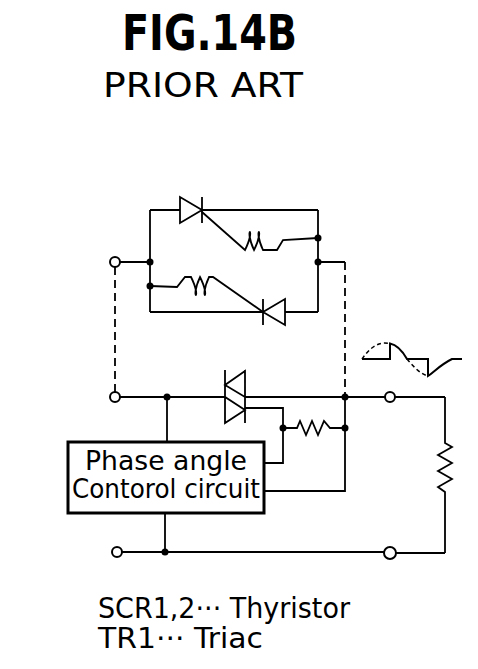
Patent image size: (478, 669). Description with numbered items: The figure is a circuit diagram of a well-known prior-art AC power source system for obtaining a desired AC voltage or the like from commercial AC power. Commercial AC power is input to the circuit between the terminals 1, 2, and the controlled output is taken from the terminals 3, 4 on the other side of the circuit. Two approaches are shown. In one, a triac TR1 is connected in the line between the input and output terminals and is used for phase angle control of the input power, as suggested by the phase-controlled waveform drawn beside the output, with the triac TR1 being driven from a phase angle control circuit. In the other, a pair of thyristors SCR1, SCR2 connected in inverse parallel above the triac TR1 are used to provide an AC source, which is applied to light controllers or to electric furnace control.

The thyristor SCR1 is at (245, 207).
The thyristor SCR2 is at (217, 311).
The triac TR1 is at (261, 392).
The terminal 1 is at (105, 552).
The terminal 2 is at (104, 398).
The terminal 3 is at (390, 536).
The terminal 4 is at (391, 413).